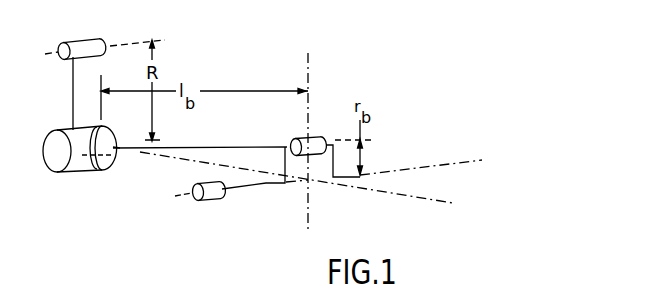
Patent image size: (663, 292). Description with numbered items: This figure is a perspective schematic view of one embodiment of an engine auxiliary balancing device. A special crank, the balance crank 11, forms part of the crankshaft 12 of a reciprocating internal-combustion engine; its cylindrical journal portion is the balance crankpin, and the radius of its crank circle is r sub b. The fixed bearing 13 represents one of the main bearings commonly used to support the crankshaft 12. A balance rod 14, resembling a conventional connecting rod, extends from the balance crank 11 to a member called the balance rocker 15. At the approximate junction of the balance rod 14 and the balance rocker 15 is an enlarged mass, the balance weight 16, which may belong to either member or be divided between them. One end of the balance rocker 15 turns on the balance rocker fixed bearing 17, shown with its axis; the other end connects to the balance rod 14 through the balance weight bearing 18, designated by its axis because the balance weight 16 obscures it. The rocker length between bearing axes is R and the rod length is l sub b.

The balance crank 11 is at (331, 140).
The crankshaft 12 is at (262, 187).
The fixed bearing 13 is at (208, 199).
The balance rod 14 is at (216, 147).
The balance rocker 15 is at (72, 89).
The balance weight 16 is at (88, 169).
The balance rocker fixed bearing 17 is at (70, 40).
The balance weight bearing 18 is at (129, 142).